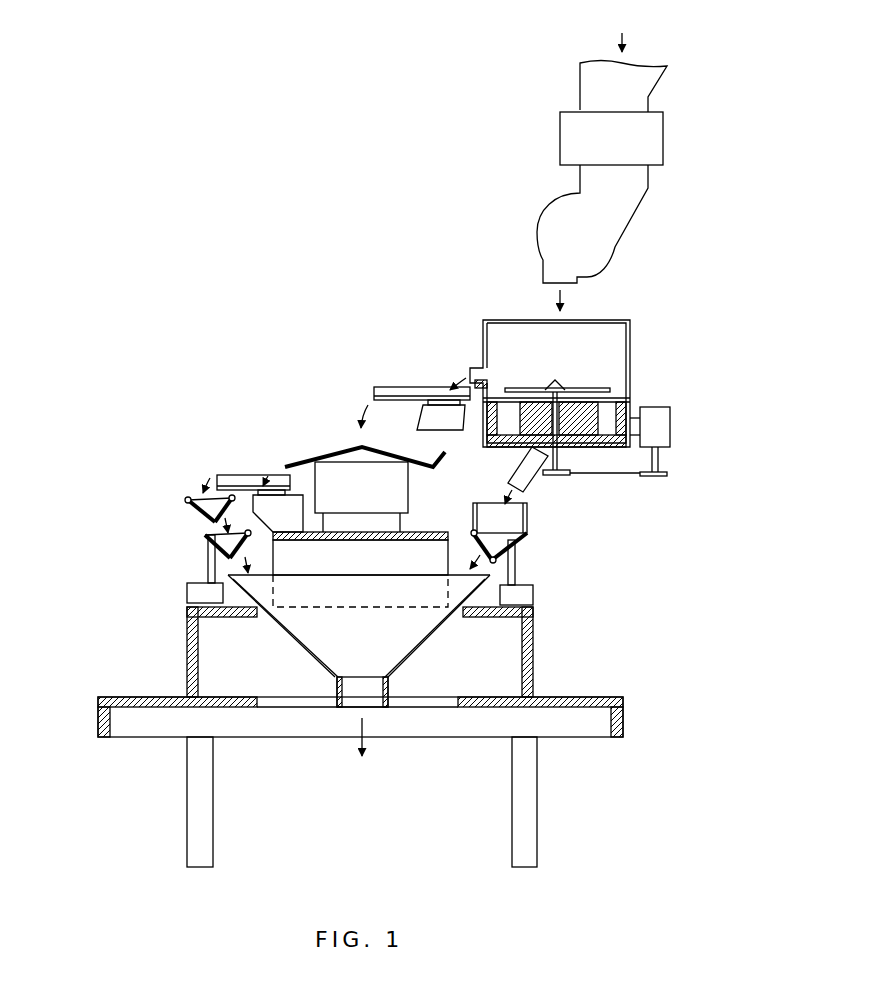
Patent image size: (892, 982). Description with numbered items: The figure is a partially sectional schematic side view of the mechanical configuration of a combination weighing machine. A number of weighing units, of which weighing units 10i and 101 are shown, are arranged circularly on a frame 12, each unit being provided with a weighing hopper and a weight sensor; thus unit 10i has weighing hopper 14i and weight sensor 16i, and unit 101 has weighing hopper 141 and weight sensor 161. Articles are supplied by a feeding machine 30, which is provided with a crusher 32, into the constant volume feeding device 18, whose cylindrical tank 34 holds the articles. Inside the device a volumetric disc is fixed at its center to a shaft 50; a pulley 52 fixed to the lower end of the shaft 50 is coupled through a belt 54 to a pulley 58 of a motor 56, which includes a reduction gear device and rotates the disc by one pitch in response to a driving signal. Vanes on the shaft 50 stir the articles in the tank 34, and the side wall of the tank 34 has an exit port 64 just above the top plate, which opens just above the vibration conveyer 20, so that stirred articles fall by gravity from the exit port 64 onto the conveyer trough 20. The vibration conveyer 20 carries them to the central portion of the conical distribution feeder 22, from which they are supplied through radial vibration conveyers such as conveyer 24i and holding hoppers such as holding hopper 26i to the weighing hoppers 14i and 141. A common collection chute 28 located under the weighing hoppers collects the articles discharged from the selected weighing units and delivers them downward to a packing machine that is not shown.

The weighing unit 10i is at (192, 557).
The weighing unit 101 is at (535, 563).
The frame 12 is at (535, 655).
The weighing hopper 14i is at (203, 537).
The weighing hopper 141 is at (530, 521).
The weight sensor 16i is at (186, 594).
The weight sensor 161 is at (535, 596).
The constant volume feeding device 18 is at (646, 371).
The vibration conveyer 20 is at (390, 386).
The conical distribution feeder 22 is at (330, 378).
The vibration conveyer 24i is at (232, 472).
The holding hopper 26i is at (187, 497).
The collection chute 28 is at (300, 648).
The feeding machine 30 is at (642, 202).
The crusher 32 is at (663, 144).
The cylindrical tank 34 is at (631, 333).
The shaft 50 is at (560, 452).
The pulley 52 is at (560, 477).
The belt 54 is at (608, 478).
The motor 56 is at (672, 437).
The pulley 58 is at (667, 476).
The exit port 64 is at (472, 368).